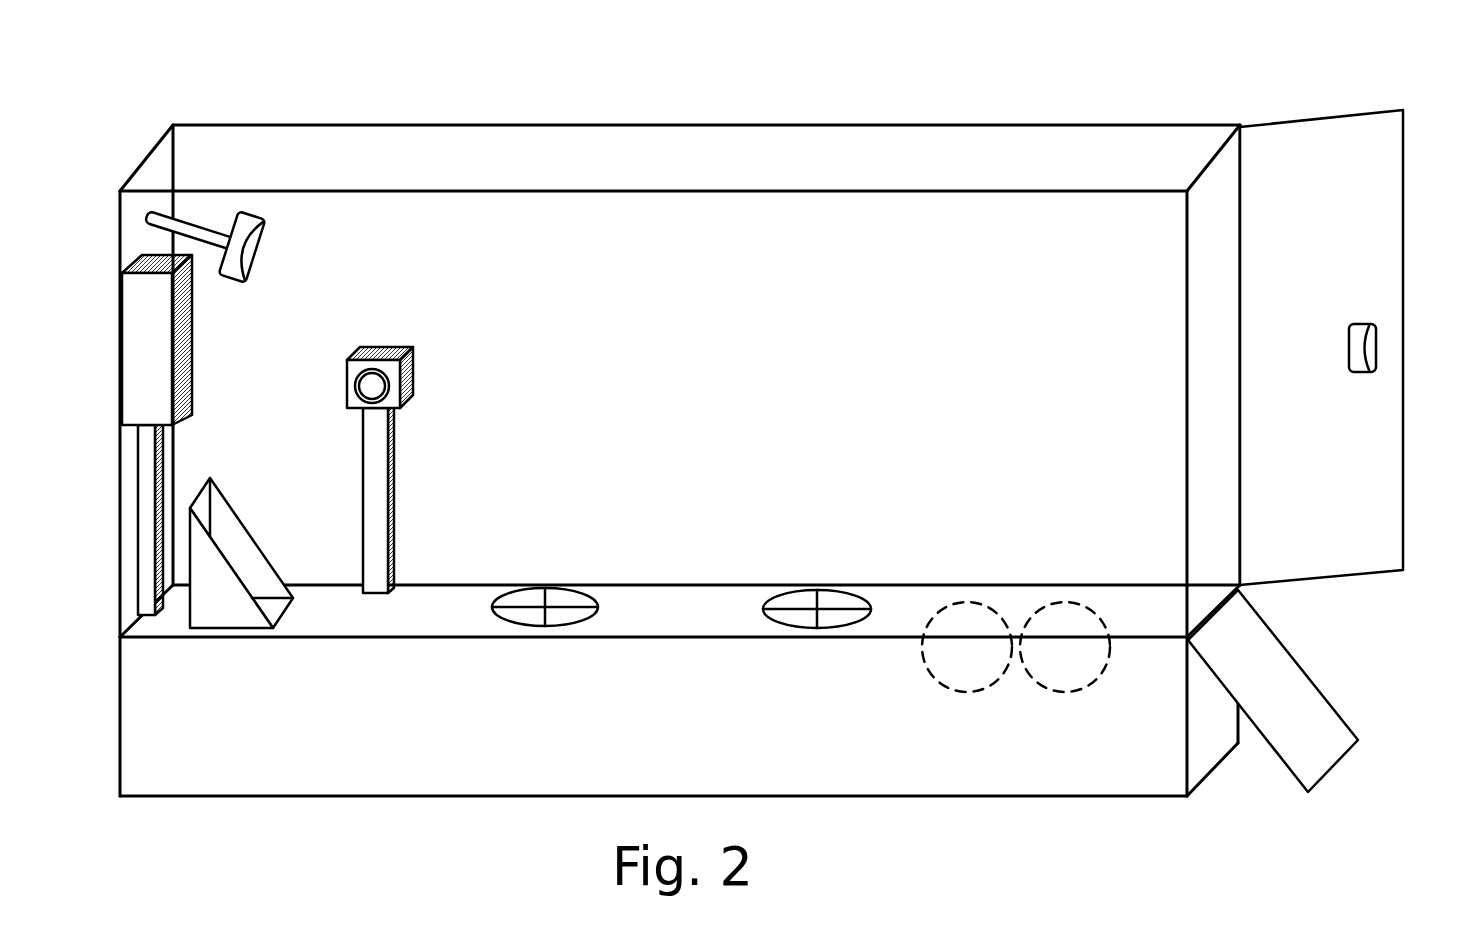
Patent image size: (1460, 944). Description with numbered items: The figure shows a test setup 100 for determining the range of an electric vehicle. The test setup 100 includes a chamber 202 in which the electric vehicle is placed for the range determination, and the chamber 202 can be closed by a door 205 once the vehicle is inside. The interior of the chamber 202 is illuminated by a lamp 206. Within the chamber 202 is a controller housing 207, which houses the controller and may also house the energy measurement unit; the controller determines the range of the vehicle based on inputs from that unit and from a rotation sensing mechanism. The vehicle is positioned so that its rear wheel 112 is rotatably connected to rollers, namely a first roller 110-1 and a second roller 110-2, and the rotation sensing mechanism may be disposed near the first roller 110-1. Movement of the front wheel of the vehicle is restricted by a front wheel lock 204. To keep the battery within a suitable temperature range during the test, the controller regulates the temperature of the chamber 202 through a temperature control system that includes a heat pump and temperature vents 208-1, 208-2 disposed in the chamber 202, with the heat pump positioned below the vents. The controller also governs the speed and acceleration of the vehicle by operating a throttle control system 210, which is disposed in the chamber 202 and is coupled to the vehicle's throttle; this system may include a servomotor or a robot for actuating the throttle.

The test setup 100 is at (195, 86).
The chamber 202 is at (1123, 84).
The door 205 is at (1330, 118).
The lamp 206 is at (257, 217).
The controller housing 207 is at (193, 373).
The throttle control system 210 is at (402, 343).
The front wheel lock 204 is at (228, 498).
The temperature vent 208-1 is at (492, 607).
The temperature vent 208-2 is at (763, 610).
The first roller 110-1 is at (965, 688).
The second roller 110-2 is at (1055, 692).
The rear wheel 112 is at (923, 797).